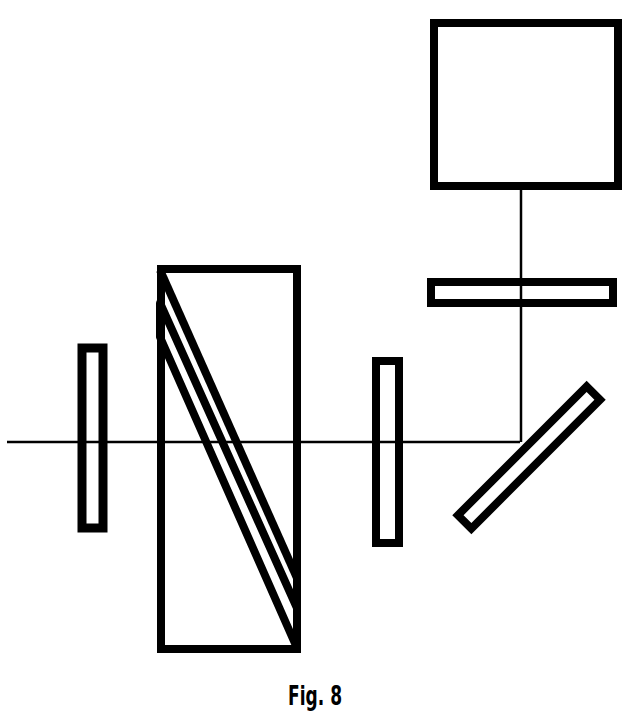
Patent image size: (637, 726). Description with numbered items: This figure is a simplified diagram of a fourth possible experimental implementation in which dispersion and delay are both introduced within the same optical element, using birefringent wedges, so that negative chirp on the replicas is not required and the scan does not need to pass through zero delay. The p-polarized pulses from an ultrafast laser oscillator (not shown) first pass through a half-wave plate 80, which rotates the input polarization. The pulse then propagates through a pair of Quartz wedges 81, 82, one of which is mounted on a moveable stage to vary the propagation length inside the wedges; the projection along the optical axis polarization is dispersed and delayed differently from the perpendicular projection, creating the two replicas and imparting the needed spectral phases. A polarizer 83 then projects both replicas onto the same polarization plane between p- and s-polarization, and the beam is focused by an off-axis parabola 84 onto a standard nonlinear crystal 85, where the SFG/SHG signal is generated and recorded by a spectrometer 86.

The half-wave plate 80 is at (92, 459).
The Quartz wedge 81 is at (209, 480).
The Quartz wedge 82 is at (248, 457).
The polarizer 83 is at (386, 472).
The off-axis parabola 84 is at (529, 457).
The nonlinear crystal 85 is at (522, 274).
The spectrometer 86 is at (505, 104).